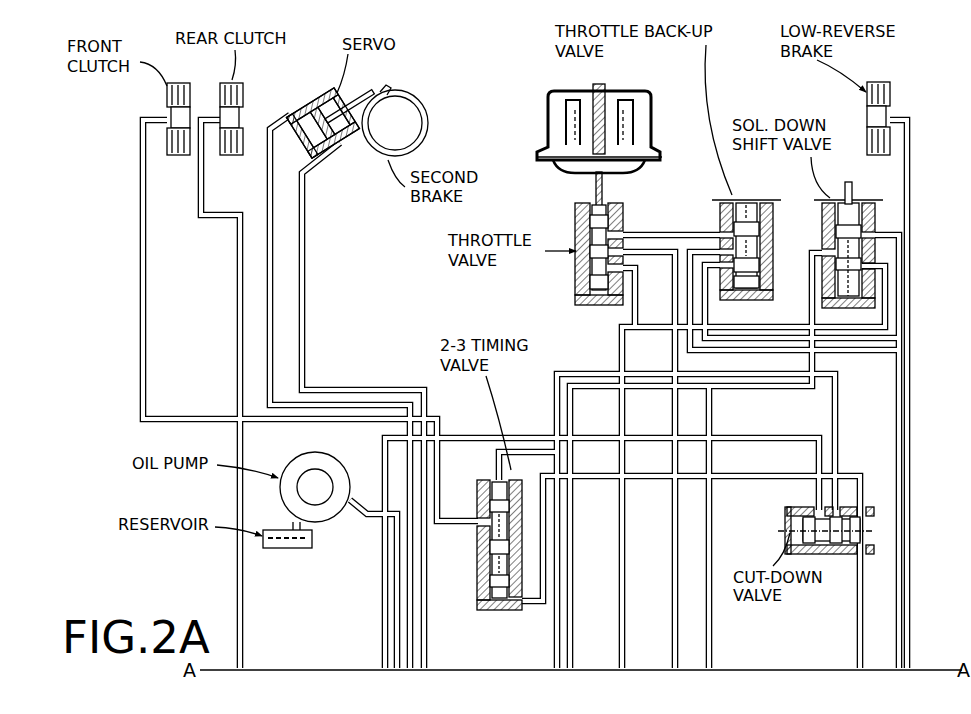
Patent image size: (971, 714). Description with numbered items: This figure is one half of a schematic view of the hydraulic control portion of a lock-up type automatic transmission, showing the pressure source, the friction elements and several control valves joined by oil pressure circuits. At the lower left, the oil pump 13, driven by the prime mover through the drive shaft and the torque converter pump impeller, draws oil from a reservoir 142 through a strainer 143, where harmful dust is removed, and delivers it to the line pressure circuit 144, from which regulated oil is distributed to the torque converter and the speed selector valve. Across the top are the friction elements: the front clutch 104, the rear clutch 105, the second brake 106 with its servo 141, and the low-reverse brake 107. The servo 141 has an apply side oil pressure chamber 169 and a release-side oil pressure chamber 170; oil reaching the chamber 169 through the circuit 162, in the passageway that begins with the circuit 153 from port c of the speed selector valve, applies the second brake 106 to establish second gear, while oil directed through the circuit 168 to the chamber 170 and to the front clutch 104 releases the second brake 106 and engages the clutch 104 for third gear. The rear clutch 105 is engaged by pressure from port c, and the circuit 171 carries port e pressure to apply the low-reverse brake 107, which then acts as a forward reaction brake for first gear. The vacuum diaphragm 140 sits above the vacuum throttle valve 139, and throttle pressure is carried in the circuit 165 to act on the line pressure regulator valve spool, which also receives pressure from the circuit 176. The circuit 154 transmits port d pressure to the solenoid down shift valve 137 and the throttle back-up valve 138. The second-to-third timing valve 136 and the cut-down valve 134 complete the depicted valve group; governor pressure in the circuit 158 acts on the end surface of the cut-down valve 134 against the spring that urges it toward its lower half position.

The oil pump 13 is at (290, 458).
The front clutch 104 is at (167, 108).
The rear clutch 105 is at (220, 93).
The second brake 106 is at (460, 87).
The low-reverse brake 107 is at (944, 110).
The cut-down valve 134 is at (873, 507).
The 2-3 timing valve 136 is at (483, 598).
The solenoid down shift valve 137 is at (900, 188).
The throttle back-up valve 138 is at (792, 188).
The vacuum throttle valve 139 is at (670, 201).
The vacuum diaphragm 140 is at (695, 123).
The servo 141 is at (338, 78).
The reservoir 142 is at (293, 549).
The strainer 143 is at (284, 530).
The line pressure circuit 144 is at (366, 516).
The circuit 153 is at (147, 307).
The circuit 154 is at (889, 238).
The circuit 158 is at (858, 657).
The circuit 162 is at (267, 183).
The circuit 165 is at (673, 357).
The circuit 168 is at (146, 183).
The apply side oil pressure chamber 169 is at (300, 108).
The release-side oil pressure chamber 170 is at (340, 150).
The circuit 171 is at (707, 312).
The circuit 176 is at (445, 442).